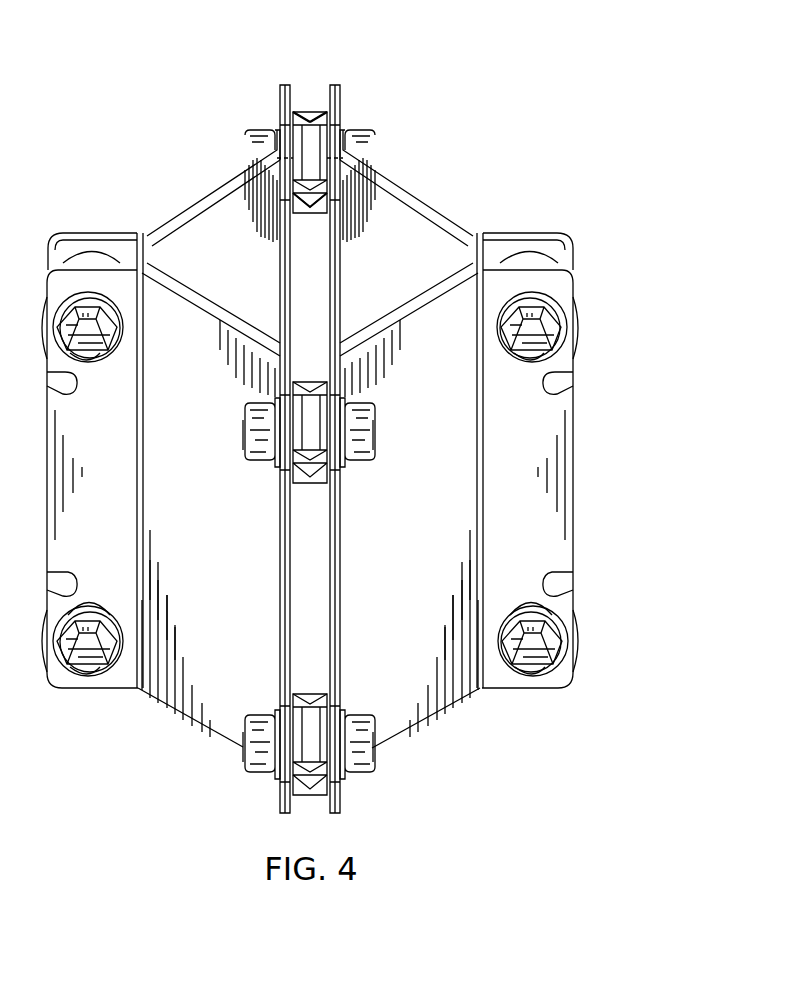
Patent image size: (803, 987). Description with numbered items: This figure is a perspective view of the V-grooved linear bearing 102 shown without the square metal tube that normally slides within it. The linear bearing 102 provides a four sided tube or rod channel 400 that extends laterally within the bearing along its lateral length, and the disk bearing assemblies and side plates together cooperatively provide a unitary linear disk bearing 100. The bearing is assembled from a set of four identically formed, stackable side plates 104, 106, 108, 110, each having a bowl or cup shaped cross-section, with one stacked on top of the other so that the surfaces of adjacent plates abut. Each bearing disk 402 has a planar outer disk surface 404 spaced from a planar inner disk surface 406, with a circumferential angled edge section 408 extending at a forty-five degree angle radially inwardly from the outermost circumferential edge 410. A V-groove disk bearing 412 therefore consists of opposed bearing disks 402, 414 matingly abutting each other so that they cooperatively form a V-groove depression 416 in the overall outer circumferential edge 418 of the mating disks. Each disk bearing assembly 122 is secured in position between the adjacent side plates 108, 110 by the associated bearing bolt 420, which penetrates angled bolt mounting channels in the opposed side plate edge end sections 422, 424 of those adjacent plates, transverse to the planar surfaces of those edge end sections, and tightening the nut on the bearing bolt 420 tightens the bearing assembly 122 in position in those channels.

The square heavy-duty metal tube 100 is at (645, 453).
The V-grooved linear bearing 102 is at (406, 190).
The side plate 104 is at (220, 683).
The side plate 106 is at (410, 690).
The side plate 108 is at (440, 212).
The side plate 110 is at (158, 222).
The disk bearing assembly 122 is at (368, 153).
The tube or rod channel 400 is at (293, 143).
The bearing disk 402 is at (331, 114).
The planar outer disk surface 404 is at (342, 195).
The planar inner disk surface 406 is at (303, 138).
The circumferential angled edge section 408 is at (310, 121).
The outermost circumferential edge 410 is at (322, 110).
The V-groove disk bearing 412 is at (312, 220).
The bearing disk 414 is at (307, 215).
The V-groove depression 416 is at (482, 238).
The overall outer circumferential edge 418 is at (298, 110).
The bearing bolt 420 is at (255, 148).
The side plate edge end section 422 is at (337, 95).
The side plate edge end section 424 is at (283, 95).